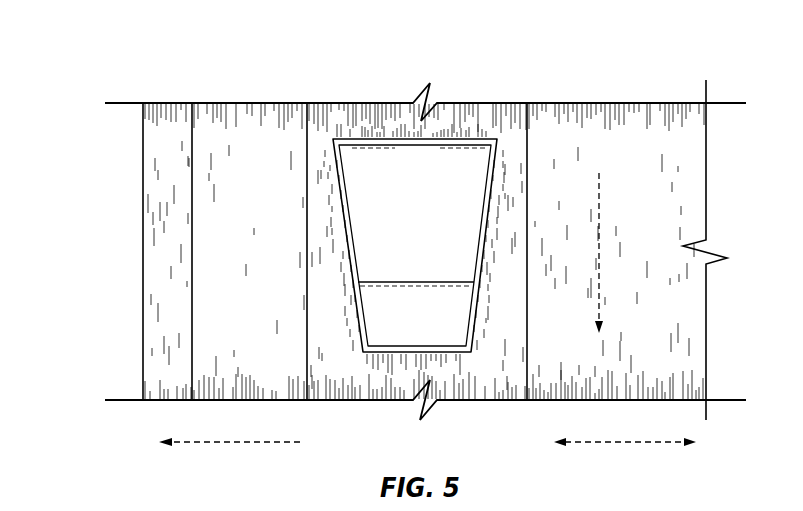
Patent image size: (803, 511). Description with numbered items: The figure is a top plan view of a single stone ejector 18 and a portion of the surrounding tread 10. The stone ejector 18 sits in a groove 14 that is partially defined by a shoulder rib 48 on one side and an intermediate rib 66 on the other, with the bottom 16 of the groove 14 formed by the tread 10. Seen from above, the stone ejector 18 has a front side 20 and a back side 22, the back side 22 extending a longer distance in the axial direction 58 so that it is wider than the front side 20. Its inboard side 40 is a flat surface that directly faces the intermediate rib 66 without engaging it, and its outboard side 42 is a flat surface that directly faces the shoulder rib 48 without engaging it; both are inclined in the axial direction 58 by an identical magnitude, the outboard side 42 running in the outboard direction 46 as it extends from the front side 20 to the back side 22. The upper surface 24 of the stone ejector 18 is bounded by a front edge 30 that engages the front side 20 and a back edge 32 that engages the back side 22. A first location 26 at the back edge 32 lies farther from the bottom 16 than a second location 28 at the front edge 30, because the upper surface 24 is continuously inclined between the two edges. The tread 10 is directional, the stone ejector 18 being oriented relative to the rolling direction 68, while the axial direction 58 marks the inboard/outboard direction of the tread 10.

The tread 10 is at (682, 46).
The groove 14 is at (510, 122).
The bottom 16 is at (482, 374).
The stone ejector 18 is at (473, 173).
The front side 20 is at (416, 337).
The back side 22 is at (381, 127).
The upper surface 24 is at (352, 174).
The first location 26 is at (440, 133).
The second location 28 is at (457, 284).
The front edge 30 is at (370, 284).
The back edge 32 is at (473, 137).
The inboard side 40 is at (490, 227).
The outboard side 42 is at (343, 253).
The outboard direction 46 is at (233, 443).
The shoulder rib 48 is at (248, 118).
The axial direction 58 is at (630, 443).
The intermediate rib 66 is at (687, 163).
The rolling direction 68 is at (600, 250).